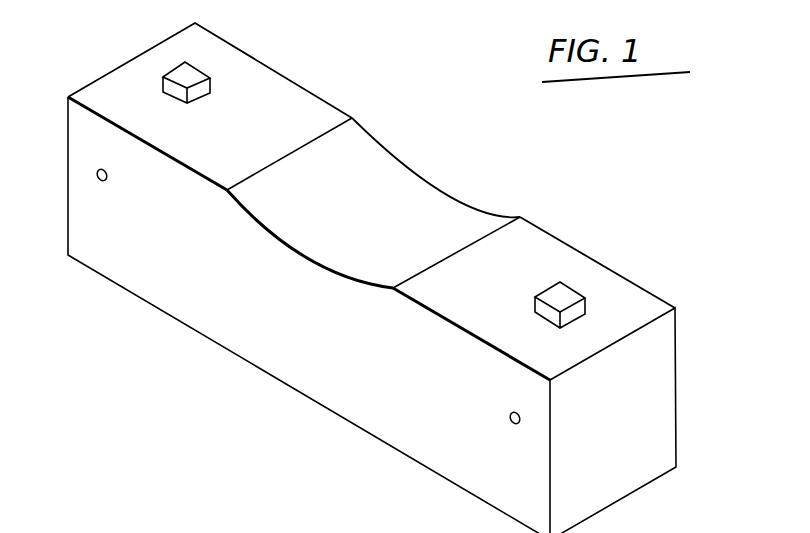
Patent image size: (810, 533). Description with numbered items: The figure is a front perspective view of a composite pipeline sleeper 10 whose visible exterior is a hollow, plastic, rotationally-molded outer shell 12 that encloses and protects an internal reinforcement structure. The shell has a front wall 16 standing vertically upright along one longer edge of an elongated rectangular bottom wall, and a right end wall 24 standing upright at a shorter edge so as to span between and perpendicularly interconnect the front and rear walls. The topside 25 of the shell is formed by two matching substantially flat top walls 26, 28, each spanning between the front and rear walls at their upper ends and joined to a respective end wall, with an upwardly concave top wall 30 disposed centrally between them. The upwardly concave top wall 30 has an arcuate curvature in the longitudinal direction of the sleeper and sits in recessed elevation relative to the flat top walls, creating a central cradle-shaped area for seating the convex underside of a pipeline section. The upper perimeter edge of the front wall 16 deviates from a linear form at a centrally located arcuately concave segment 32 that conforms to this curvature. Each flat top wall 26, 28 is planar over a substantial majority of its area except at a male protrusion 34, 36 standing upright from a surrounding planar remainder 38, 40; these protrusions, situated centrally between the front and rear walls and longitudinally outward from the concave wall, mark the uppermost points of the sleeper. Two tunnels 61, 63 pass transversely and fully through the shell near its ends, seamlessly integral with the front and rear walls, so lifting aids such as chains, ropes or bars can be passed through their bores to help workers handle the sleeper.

The sleeper 10 is at (667, 230).
The outer shell 12 is at (652, 385).
The front wall 16 is at (367, 415).
The right end wall 24 is at (662, 428).
The topside 25 is at (408, 163).
The substantially flat top wall 26 is at (270, 97).
The substantially flat top wall 28 is at (535, 257).
The upwardly concave top wall 30 is at (403, 197).
The arcuately concave segment 32 is at (445, 197).
The male protrusion 34 is at (188, 70).
The male protrusion 36 is at (560, 290).
The planar remainder 38 is at (152, 60).
The planar remainder 40 is at (613, 293).
The tunnel 61 is at (97, 178).
The tunnel 63 is at (508, 425).